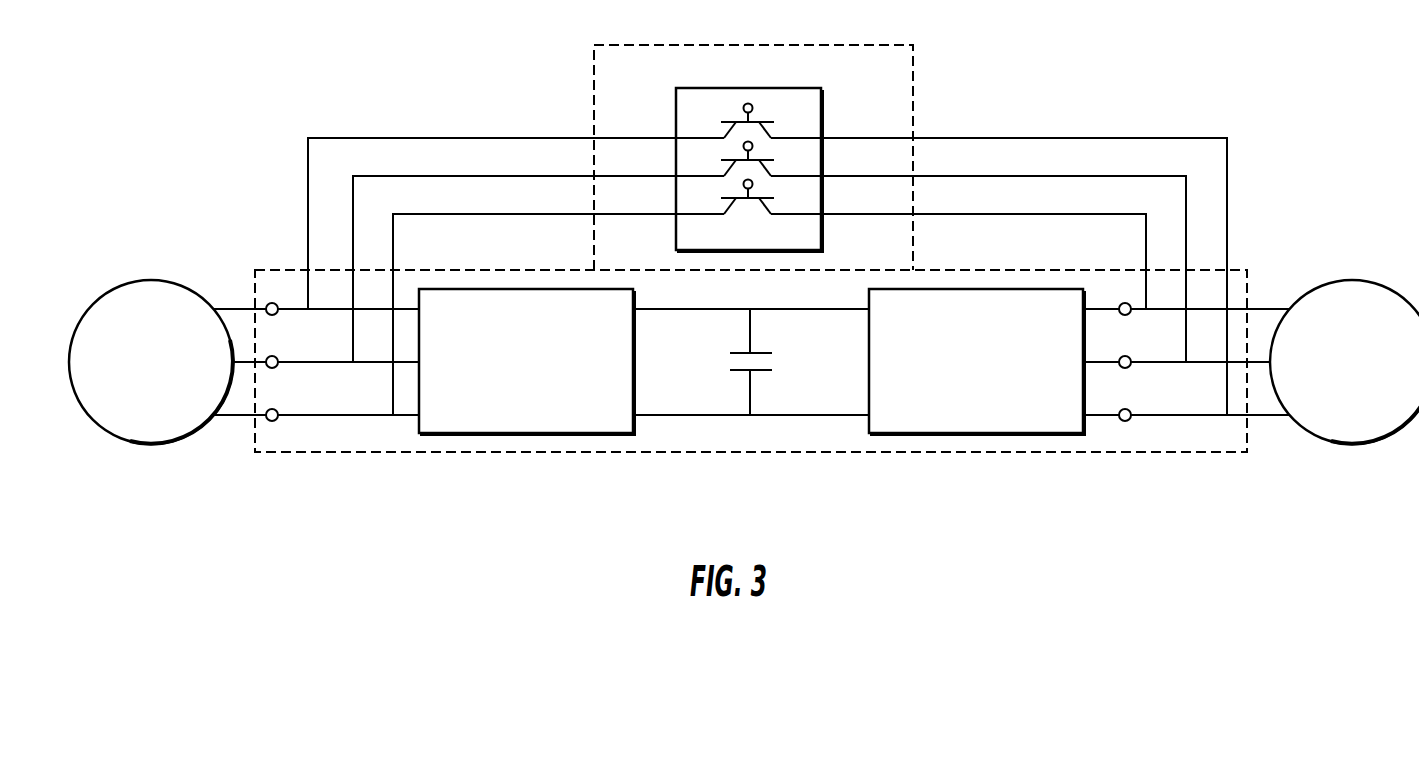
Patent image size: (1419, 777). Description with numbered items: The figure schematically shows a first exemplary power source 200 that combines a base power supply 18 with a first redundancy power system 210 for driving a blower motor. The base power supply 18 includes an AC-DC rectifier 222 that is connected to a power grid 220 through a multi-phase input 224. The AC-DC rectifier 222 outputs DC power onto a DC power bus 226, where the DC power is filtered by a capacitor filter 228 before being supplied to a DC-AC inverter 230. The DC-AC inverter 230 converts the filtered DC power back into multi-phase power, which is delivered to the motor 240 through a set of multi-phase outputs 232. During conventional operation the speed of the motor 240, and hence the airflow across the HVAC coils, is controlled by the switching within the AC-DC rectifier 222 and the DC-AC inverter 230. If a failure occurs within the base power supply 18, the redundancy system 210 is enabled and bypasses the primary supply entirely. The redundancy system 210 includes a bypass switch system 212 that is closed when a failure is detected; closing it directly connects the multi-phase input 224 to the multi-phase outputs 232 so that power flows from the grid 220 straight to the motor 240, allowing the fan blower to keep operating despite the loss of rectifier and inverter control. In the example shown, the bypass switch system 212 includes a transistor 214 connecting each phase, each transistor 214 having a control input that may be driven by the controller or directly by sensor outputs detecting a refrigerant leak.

The power source 200 is at (199, 100).
The redundancy power system 210 is at (594, 102).
The bypass switch system 212 is at (676, 124).
The transistor 214 is at (754, 121).
The power grid 220 is at (127, 280).
The multi-phase input 224 is at (278, 411).
The base power supply 18 is at (795, 452).
The AC-DC rectifier 222 is at (541, 434).
The DC power bus 226 is at (708, 309).
The capacitor filter 228 is at (762, 372).
The DC-AC inverter 230 is at (979, 434).
The multi-phase outputs 232 is at (1130, 313).
The motor 240 is at (1355, 280).